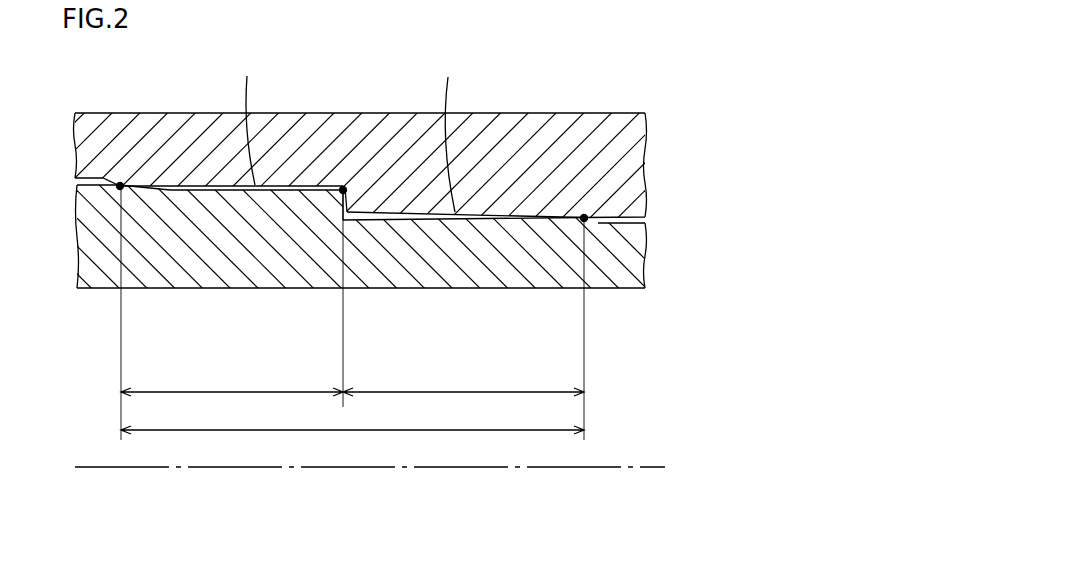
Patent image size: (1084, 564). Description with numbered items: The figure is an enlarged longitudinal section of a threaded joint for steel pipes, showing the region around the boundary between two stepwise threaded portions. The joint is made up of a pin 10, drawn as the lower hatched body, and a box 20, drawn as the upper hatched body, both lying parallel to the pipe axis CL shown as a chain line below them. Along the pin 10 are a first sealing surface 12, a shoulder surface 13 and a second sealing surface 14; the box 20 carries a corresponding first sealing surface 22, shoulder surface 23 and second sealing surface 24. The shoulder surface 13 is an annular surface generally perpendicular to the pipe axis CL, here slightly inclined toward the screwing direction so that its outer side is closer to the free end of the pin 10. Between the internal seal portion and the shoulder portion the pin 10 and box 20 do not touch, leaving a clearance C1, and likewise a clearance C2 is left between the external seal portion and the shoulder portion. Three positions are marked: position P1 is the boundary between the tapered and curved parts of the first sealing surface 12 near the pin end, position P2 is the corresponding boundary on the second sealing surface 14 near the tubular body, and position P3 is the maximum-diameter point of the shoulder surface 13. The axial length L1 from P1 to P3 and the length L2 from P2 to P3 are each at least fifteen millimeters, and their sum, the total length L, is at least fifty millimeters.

The pin 10 is at (625, 292).
The box 20 is at (625, 107).
The first sealing surface 12 is at (556, 219).
The shoulder surface 13 is at (343, 200).
The second sealing surface 14 is at (149, 191).
The first sealing surface 22 is at (556, 213).
The shoulder surface 23 is at (345, 188).
The second sealing surface 24 is at (148, 184).
The position P1 is at (584, 218).
The position P2 is at (120, 186).
The position P3 is at (343, 190).
The clearance C1 is at (451, 134).
The clearance C2 is at (254, 120).
The total length L is at (352, 420).
The length L1 is at (463, 331).
The length L2 is at (232, 315).
The pipe axis CL is at (386, 468).